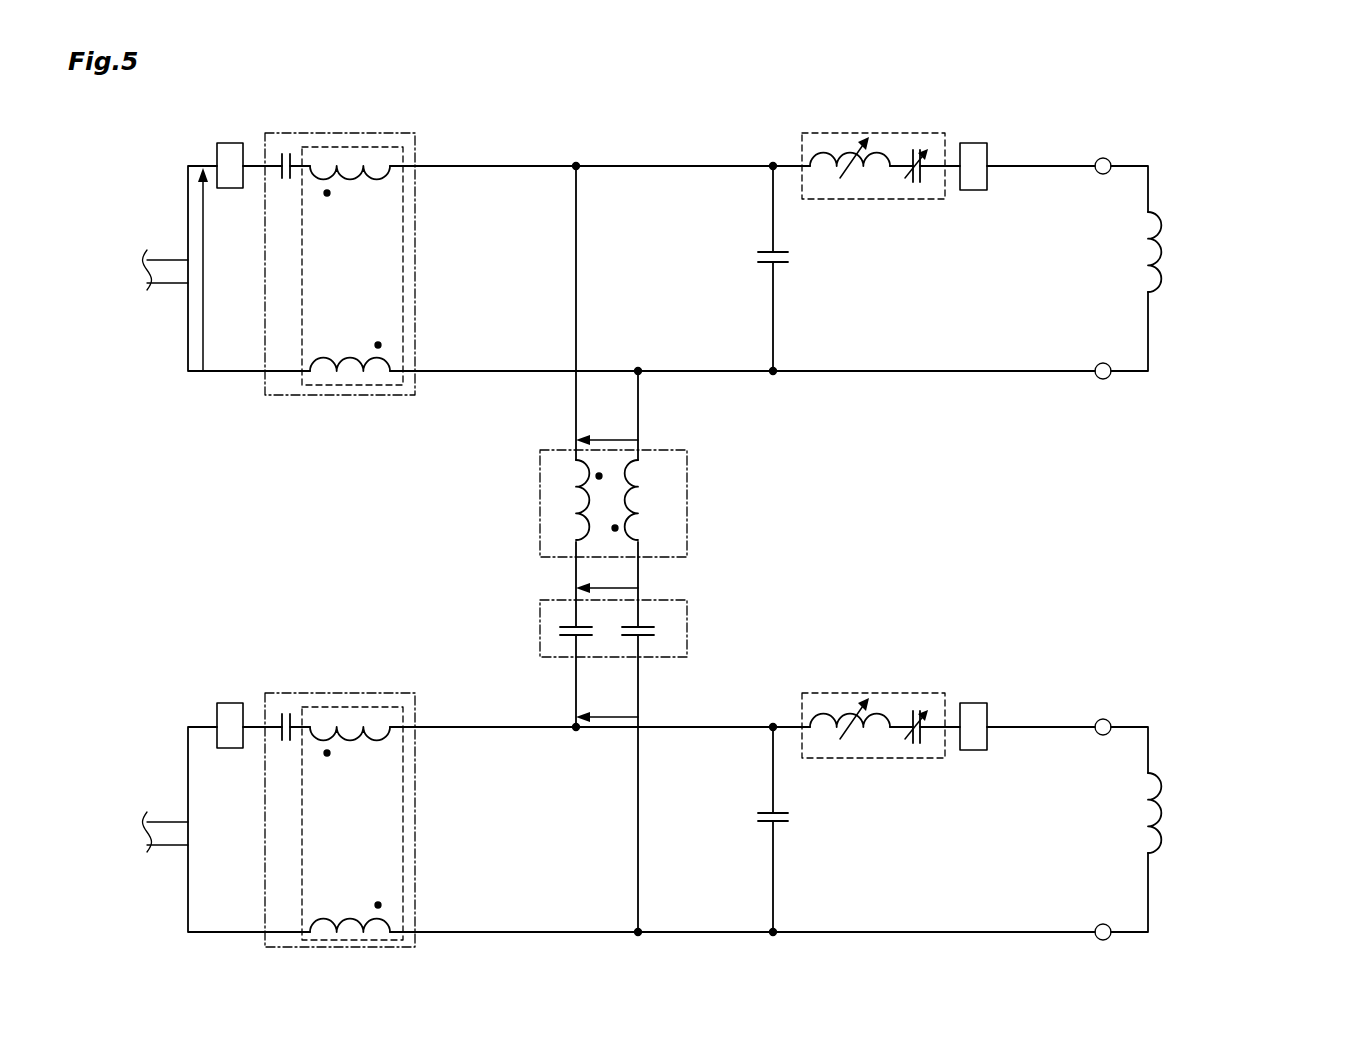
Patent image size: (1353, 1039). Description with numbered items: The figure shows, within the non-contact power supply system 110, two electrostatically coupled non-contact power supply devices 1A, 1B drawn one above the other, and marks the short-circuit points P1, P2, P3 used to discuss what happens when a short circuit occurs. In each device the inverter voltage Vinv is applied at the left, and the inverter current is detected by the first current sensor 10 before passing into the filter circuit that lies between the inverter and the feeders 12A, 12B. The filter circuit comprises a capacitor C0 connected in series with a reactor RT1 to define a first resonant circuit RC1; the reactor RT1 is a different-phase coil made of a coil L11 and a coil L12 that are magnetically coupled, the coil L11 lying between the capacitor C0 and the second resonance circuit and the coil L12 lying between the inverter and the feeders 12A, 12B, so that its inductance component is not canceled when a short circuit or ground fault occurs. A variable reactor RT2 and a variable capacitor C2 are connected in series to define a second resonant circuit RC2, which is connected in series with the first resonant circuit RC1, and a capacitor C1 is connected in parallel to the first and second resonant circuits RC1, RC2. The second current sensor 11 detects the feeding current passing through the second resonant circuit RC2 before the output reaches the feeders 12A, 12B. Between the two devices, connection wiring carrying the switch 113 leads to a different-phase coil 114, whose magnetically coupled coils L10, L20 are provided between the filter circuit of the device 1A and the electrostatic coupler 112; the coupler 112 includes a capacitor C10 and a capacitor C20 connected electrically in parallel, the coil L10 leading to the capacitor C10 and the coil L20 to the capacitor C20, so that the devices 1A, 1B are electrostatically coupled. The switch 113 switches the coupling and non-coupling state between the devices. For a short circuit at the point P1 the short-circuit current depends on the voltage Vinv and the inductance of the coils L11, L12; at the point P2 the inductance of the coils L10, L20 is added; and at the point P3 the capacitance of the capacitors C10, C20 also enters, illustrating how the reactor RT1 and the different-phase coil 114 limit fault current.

The non-contact power supply system 110 is at (1282, 135).
The non-contact power supply device 1A is at (1165, 148).
The non-contact power supply device 1B is at (1172, 705).
The first current sensor 10 is at (228, 142).
The second current sensor 11 is at (973, 143).
The feeder 12A is at (1197, 549).
The feeder 12B is at (1150, 187).
The capacitor C0 is at (278, 160).
The capacitor C1 is at (765, 265).
The capacitor C2 is at (912, 160).
The first resonant circuit RC1 is at (335, 132).
The reactor RT1 is at (375, 147).
The coil L11 is at (352, 183).
The coil L12 is at (327, 353).
The second resonant circuit RC2 is at (845, 132).
The reactor RT2 is at (838, 172).
The voltage of inverter Vinv is at (231, 269).
The switch 113 is at (575, 277).
The different-phase coil 114 is at (687, 516).
The coil L10 is at (587, 473).
The coil L20 is at (630, 473).
The electrostatic coupler 112 is at (687, 645).
The capacitor C10 is at (570, 627).
The capacitor C20 is at (653, 627).
The short-circuit point P1 is at (607, 426).
The short-circuit point P2 is at (607, 576).
The short-circuit point P3 is at (607, 704).